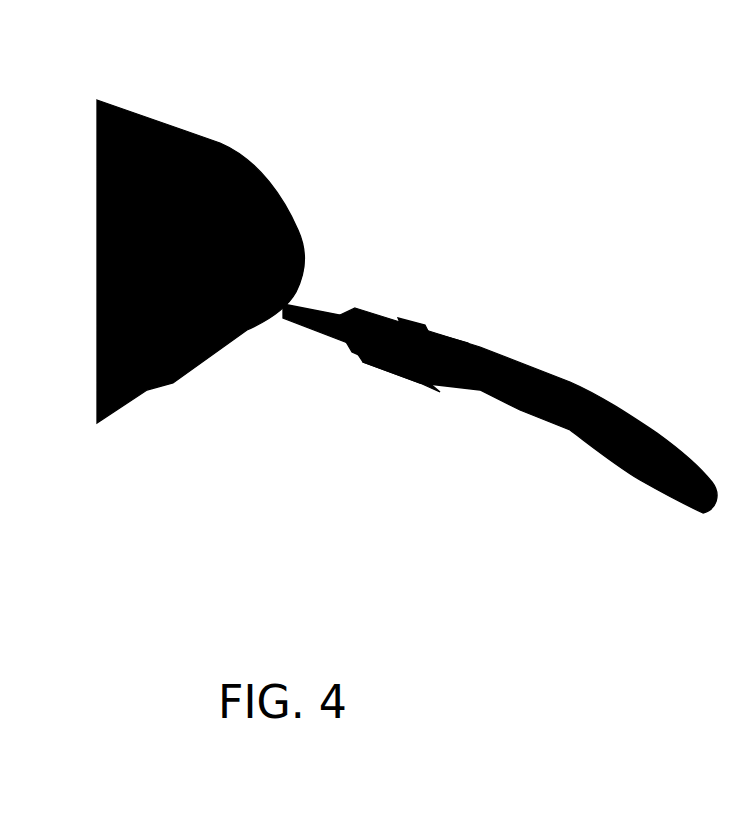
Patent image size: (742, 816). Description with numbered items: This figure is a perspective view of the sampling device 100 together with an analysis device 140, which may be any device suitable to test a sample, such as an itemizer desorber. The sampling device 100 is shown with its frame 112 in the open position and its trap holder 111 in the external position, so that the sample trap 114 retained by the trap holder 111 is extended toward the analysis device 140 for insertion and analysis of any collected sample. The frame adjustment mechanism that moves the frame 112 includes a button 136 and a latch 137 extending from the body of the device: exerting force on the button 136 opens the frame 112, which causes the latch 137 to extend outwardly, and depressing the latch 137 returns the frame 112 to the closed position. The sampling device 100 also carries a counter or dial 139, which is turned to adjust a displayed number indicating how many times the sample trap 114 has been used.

The sampling device 100 is at (532, 490).
The trap holder 111 is at (352, 358).
The frame 112 is at (383, 363).
The sample trap 114 is at (308, 330).
The button 136 is at (453, 340).
The latch 137 is at (410, 323).
The dial 139 is at (528, 365).
The analysis device 140 is at (258, 170).